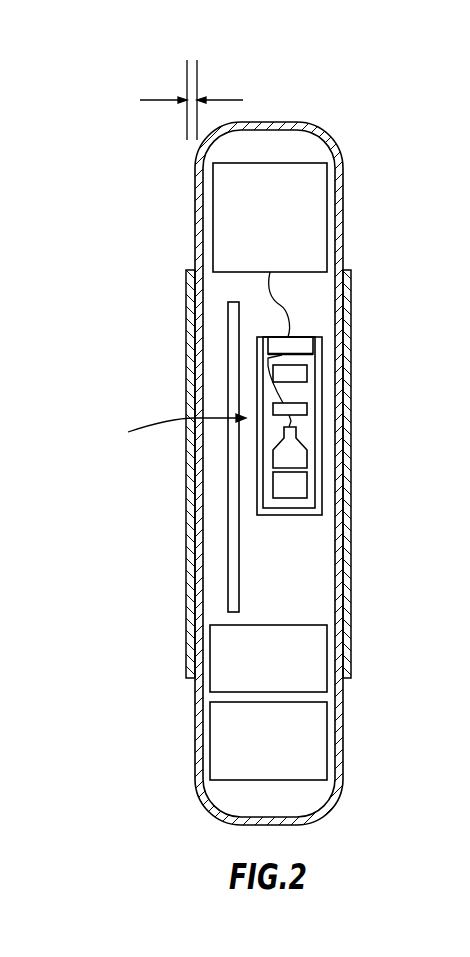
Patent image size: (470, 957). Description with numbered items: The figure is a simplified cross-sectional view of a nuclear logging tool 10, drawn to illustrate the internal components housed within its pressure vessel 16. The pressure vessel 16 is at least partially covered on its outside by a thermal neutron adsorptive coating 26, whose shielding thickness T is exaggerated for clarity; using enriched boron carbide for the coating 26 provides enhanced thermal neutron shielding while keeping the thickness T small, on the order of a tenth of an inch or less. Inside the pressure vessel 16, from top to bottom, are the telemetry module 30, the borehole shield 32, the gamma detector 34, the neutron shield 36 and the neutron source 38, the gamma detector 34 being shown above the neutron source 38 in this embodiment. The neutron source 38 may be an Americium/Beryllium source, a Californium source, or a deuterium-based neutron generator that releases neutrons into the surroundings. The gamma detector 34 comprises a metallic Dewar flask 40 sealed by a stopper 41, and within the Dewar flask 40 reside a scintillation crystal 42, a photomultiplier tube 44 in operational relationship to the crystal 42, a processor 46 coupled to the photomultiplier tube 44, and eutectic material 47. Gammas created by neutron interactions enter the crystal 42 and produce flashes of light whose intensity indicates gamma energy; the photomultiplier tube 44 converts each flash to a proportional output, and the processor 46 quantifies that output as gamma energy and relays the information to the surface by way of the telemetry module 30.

The nuclear logging tool 10 is at (269, 441).
The pressure vessel 16 is at (342, 162).
The thermal neutron adsorptive coating 26 is at (352, 547).
The telemetry module 30 is at (327, 207).
The borehole shield 32 is at (228, 342).
The gamma detector 34 is at (170, 436).
The neutron shield 36 is at (328, 667).
The neutron source 38 is at (328, 739).
The metallic Dewar flask 40 is at (350, 420).
The stopper 41 is at (303, 345).
The crystal 42 is at (298, 486).
The photomultiplier tube 44 is at (295, 452).
The processor 46 is at (300, 410).
The eutectic material 47 is at (300, 375).
The shielding thickness T is at (150, 100).